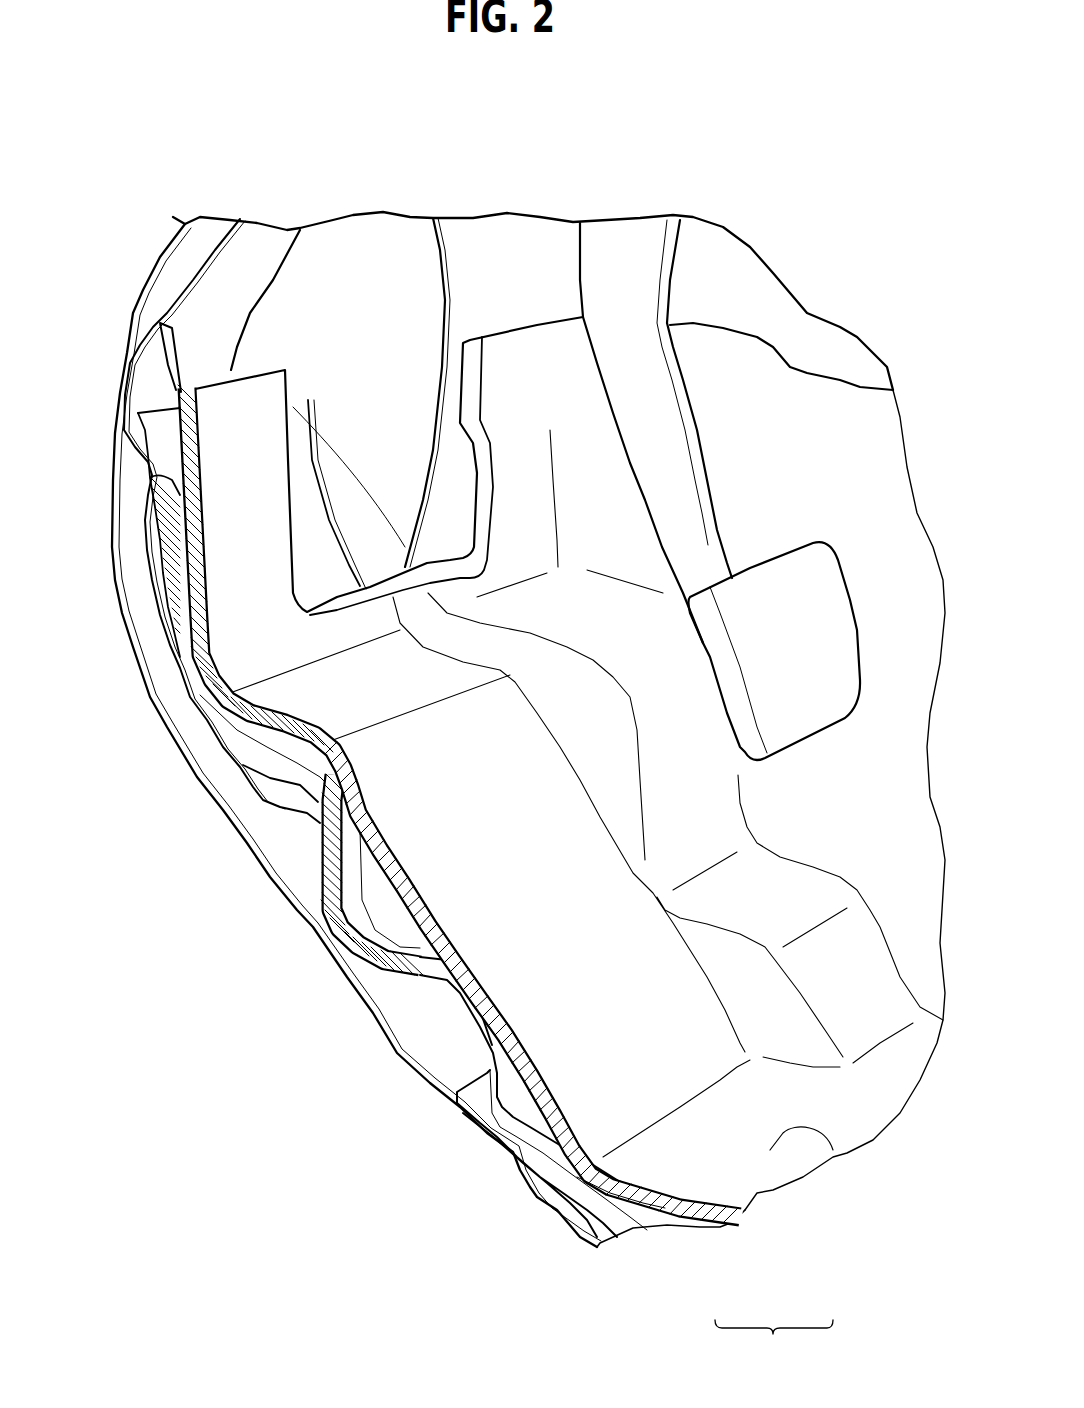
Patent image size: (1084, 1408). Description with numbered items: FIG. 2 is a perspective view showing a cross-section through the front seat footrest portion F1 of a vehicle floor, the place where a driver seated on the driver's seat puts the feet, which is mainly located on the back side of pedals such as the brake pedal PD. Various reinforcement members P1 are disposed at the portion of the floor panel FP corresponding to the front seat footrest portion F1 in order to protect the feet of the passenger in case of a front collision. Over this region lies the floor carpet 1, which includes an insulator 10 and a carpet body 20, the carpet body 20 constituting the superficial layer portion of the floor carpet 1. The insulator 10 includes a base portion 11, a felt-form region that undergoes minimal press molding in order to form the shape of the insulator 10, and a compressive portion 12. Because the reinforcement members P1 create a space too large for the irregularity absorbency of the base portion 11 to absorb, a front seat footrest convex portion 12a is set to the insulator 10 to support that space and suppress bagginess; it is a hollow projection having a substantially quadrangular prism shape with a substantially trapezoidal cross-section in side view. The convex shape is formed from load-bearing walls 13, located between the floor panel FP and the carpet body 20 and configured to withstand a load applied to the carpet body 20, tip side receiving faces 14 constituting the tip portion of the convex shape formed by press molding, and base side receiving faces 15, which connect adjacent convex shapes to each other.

The floor carpet 1 is at (774, 1346).
The insulator 10 is at (680, 1220).
The carpet body 20 is at (833, 1150).
The base portion 11 is at (647, 1220).
The compressive portion 12 is at (460, 804).
The front seat footrest convex portion 12a is at (353, 1182).
The load-bearing wall 13 is at (313, 873).
The tip side receiving face 14 is at (467, 1017).
The base side receiving face 15 is at (343, 940).
The front seat footrest portion F1 is at (546, 176).
The floor panel FP is at (113, 497).
The reinforcement member P1 is at (200, 717).
The brake pedal PD is at (820, 610).